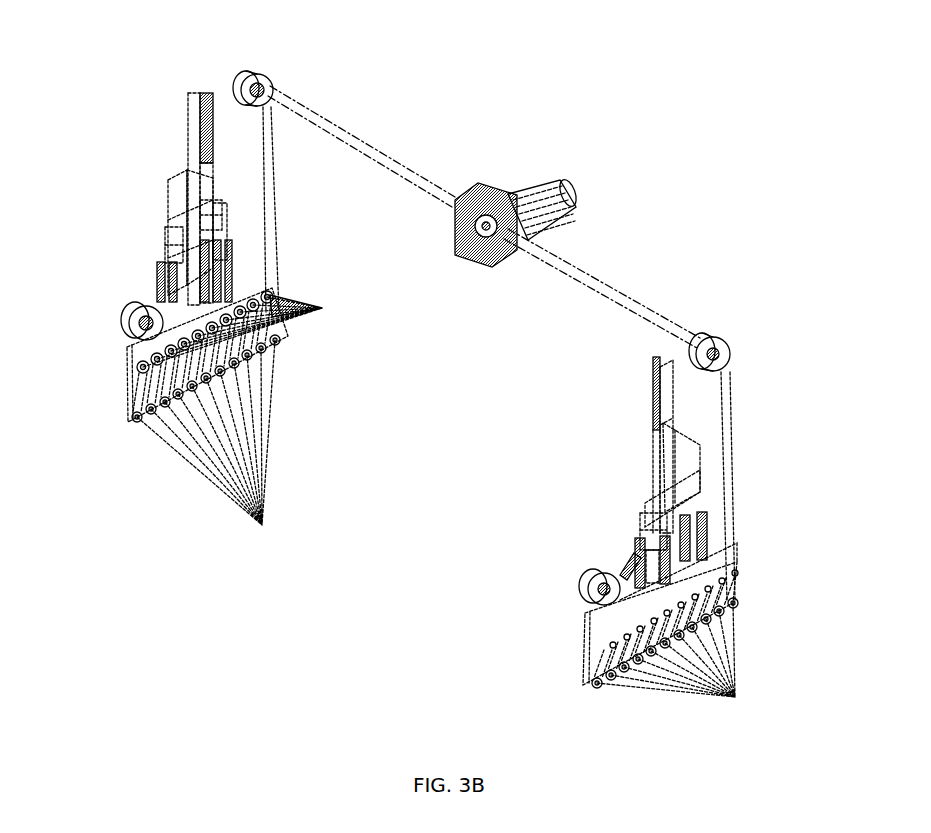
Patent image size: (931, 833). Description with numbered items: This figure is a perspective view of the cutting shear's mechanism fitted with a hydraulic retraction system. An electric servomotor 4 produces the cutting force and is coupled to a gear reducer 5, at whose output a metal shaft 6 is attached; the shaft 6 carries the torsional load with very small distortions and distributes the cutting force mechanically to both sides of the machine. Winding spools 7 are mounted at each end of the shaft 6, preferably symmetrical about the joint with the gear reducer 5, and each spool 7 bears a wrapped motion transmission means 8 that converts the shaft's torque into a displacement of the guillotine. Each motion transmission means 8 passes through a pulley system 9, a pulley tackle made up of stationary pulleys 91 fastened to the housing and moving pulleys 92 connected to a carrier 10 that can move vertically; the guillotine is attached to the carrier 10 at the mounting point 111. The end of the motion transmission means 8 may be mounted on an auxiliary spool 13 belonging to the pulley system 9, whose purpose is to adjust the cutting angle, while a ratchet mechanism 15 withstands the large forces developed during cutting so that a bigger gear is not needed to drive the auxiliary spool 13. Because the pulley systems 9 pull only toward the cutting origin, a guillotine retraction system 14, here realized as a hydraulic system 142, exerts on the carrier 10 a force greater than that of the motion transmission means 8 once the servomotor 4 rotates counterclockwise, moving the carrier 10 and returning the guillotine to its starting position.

The electric servomotor 4 is at (567, 200).
The gear reducer 5 is at (460, 266).
The metal shaft 6 is at (390, 157).
The winding spool 7 is at (264, 74).
The motion transmission means 8 is at (277, 200).
The pulley system 9 is at (120, 387).
The stationary pulleys 91 is at (262, 527).
The moving pulleys 92 is at (323, 309).
The carrier 10 is at (190, 135).
The mounting point 111 is at (170, 178).
The auxiliary spool 13 is at (128, 317).
The guillotine retraction system 14 is at (172, 258).
The hydraulic system 142 is at (167, 290).
The ratchet mechanism 15 is at (603, 605).